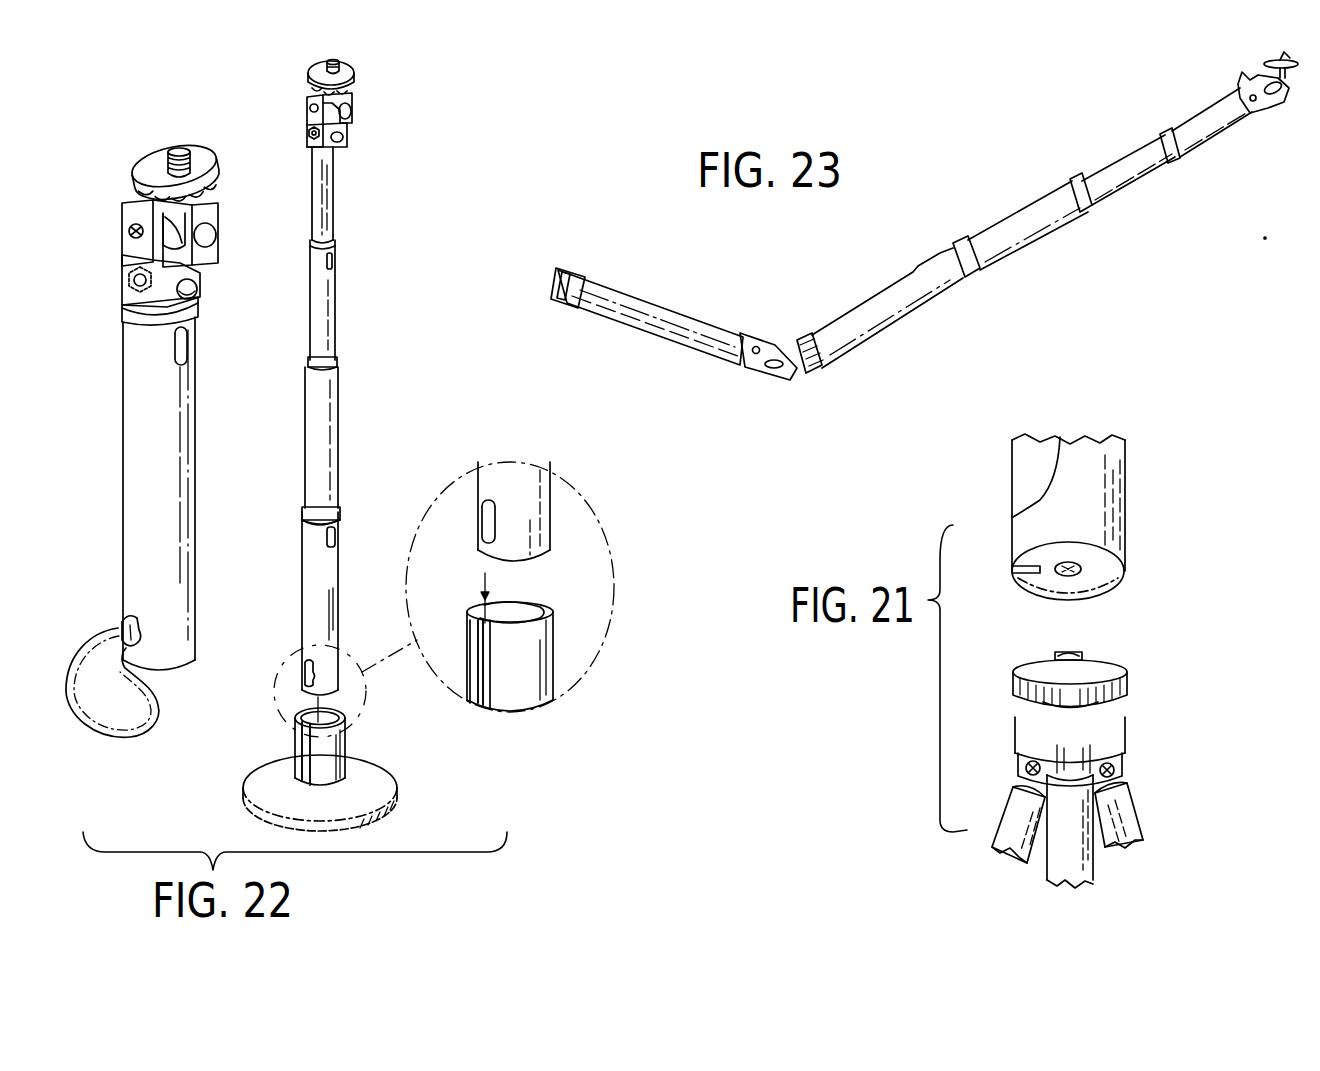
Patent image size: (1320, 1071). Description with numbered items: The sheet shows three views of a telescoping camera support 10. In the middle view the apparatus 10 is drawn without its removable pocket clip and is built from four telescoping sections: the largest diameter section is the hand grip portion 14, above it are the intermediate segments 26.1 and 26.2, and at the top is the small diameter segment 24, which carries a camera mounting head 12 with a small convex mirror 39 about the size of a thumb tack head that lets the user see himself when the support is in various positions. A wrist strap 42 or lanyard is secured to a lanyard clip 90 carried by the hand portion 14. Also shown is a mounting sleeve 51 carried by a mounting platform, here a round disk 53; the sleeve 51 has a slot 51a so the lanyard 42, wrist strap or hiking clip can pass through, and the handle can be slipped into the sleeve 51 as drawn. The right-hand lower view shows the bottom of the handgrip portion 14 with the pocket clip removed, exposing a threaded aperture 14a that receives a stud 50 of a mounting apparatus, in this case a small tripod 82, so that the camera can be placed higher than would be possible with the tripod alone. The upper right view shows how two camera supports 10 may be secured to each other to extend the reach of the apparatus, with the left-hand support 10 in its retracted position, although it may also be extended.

In FIG. 22, the camera support 10 is at (100, 512).
In FIG. 23, the camera support 10 is at (650, 290).
In FIG. 22, the head assembly 12 is at (115, 275).
In FIG. 22, the hand grip portion 14 is at (188, 447).
In FIG. 21, the hand grip portion 14 is at (1093, 482).
In FIG. 21, the threaded aperture 14a is at (1068, 575).
In FIG. 22, the small diameter segment 24 is at (333, 190).
In FIG. 22, the intermediate segment 26.1 is at (335, 286).
In FIG. 22, the intermediate segment 26.2 is at (338, 410).
In FIG. 22, the convex mirror 39 is at (197, 293).
In FIG. 22, the wrist strap 42 is at (100, 738).
In FIG. 21, the stud 50 is at (1057, 652).
In FIG. 22, the mounting sleeve 51 is at (347, 763).
In FIG. 22, the slot 51a is at (313, 765).
In FIG. 22, the round disk 53 is at (407, 757).
In FIG. 21, the small tripod 82 is at (1155, 817).
In FIG. 22, the lanyard clip 90 is at (124, 620).